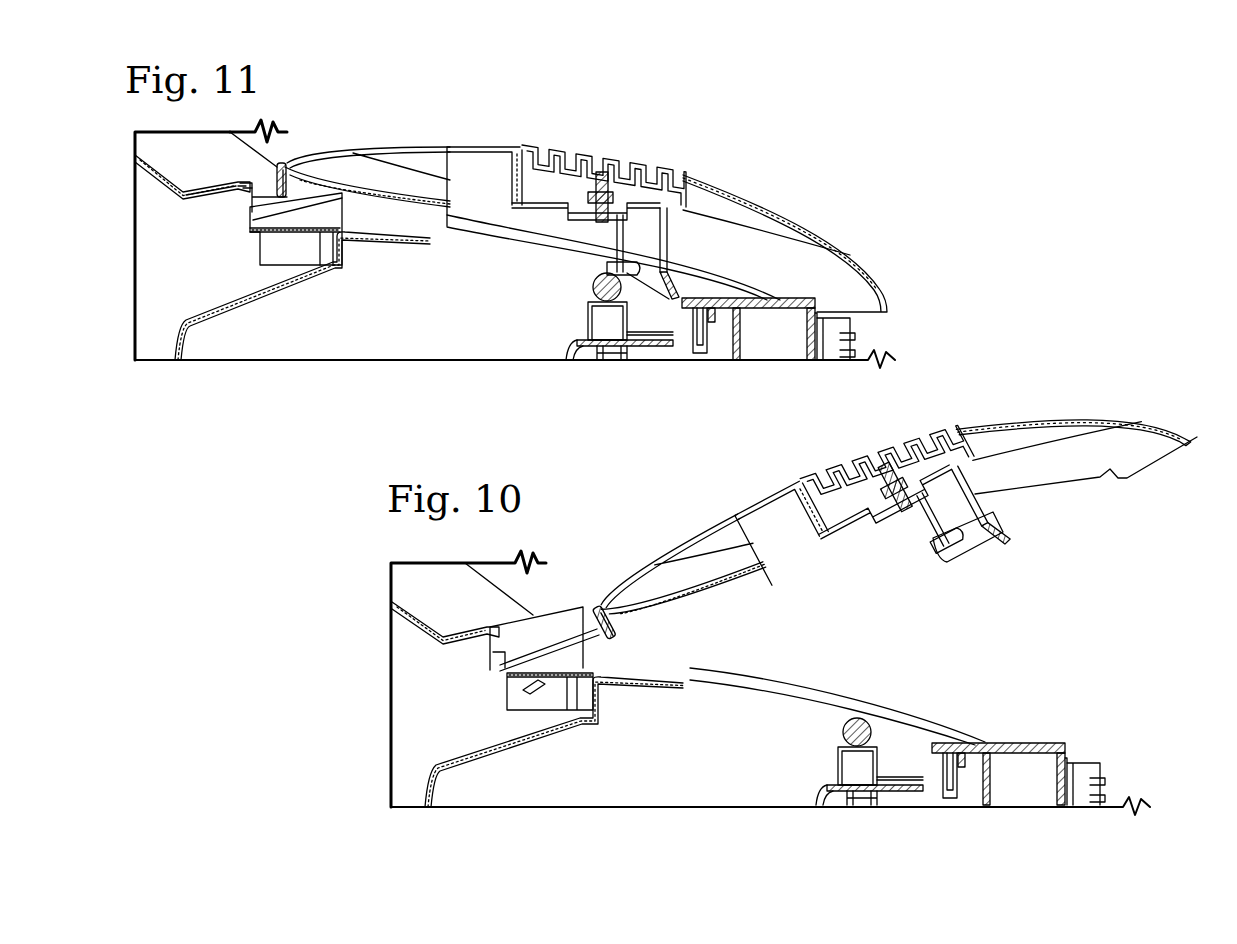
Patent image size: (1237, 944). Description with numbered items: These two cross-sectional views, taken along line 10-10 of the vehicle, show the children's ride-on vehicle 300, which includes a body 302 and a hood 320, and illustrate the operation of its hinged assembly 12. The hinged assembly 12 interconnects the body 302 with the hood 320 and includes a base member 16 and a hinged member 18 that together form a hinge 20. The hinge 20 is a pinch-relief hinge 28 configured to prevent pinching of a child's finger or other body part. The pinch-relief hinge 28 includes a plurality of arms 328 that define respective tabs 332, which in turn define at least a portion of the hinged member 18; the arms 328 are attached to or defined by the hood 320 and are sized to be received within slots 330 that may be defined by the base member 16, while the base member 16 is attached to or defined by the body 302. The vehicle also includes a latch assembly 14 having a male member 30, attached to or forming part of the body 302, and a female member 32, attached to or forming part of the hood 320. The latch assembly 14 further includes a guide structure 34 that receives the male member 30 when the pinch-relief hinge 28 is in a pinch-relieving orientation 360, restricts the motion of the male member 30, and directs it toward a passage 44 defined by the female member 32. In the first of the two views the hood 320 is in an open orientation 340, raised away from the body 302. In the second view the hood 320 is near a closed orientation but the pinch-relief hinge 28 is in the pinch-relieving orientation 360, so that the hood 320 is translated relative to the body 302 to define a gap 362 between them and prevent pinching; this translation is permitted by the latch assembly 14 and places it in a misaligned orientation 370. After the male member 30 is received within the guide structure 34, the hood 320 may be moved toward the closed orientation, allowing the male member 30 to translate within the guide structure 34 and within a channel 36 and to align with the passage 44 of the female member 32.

In FIG. 11, the container assembly 10 is at (879, 121).
In FIG. 10, the container assembly 10 is at (251, 516).
In FIG. 11, the hinged assembly 12 is at (290, 120).
In FIG. 10, the hinged assembly 12 is at (581, 559).
In FIG. 11, the latch assembly 14 is at (523, 277).
In FIG. 10, the latch assembly 14 is at (1157, 631).
In FIG. 11, the base member 16 is at (240, 291).
In FIG. 10, the base member 16 is at (453, 706).
In FIG. 11, the hinged member 18 is at (440, 149).
In FIG. 10, the hinged member 18 is at (713, 536).
In FIG. 11, the hinge 20 is at (299, 142).
In FIG. 10, the hinge 20 is at (561, 577).
In FIG. 11, the pinch-relief hinge 28 is at (304, 156).
In FIG. 10, the pinch-relief hinge 28 is at (594, 597).
In FIG. 11, the male member 30 is at (584, 321).
In FIG. 10, the male member 30 is at (850, 761).
In FIG. 11, the female member 32 is at (670, 237).
In FIG. 10, the female member 32 is at (979, 486).
In FIG. 11, the guide structure 34 is at (672, 285).
In FIG. 10, the guide structure 34 is at (949, 548).
In FIG. 11, the channel 36 is at (632, 288).
In FIG. 11, the passage 44 is at (612, 261).
In FIG. 10, the passage 44 is at (957, 525).
In FIG. 11, the children's ride-on vehicle 300 is at (860, 169).
In FIG. 10, the children's ride-on vehicle 300 is at (281, 566).
In FIG. 11, the body 302 is at (132, 320).
In FIG. 10, the body 302 is at (387, 757).
In FIG. 11, the hood 320 is at (481, 146).
In FIG. 10, the hood 320 is at (757, 497).
In FIG. 11, the arms 328 is at (247, 188).
In FIG. 10, the arms 328 is at (598, 645).
In FIG. 11, the slots 330 is at (253, 192).
In FIG. 10, the slots 330 is at (530, 664).
In FIG. 11, the tabs 332 is at (199, 200).
In FIG. 10, the tabs 332 is at (537, 683).
In FIG. 10, the open orientation 340 is at (1163, 381).
In FIG. 11, the pinch-relieving orientation 360 is at (250, 127).
In FIG. 11, the gap 362 is at (266, 177).
In FIG. 11, the misaligned orientation 370 is at (609, 368).